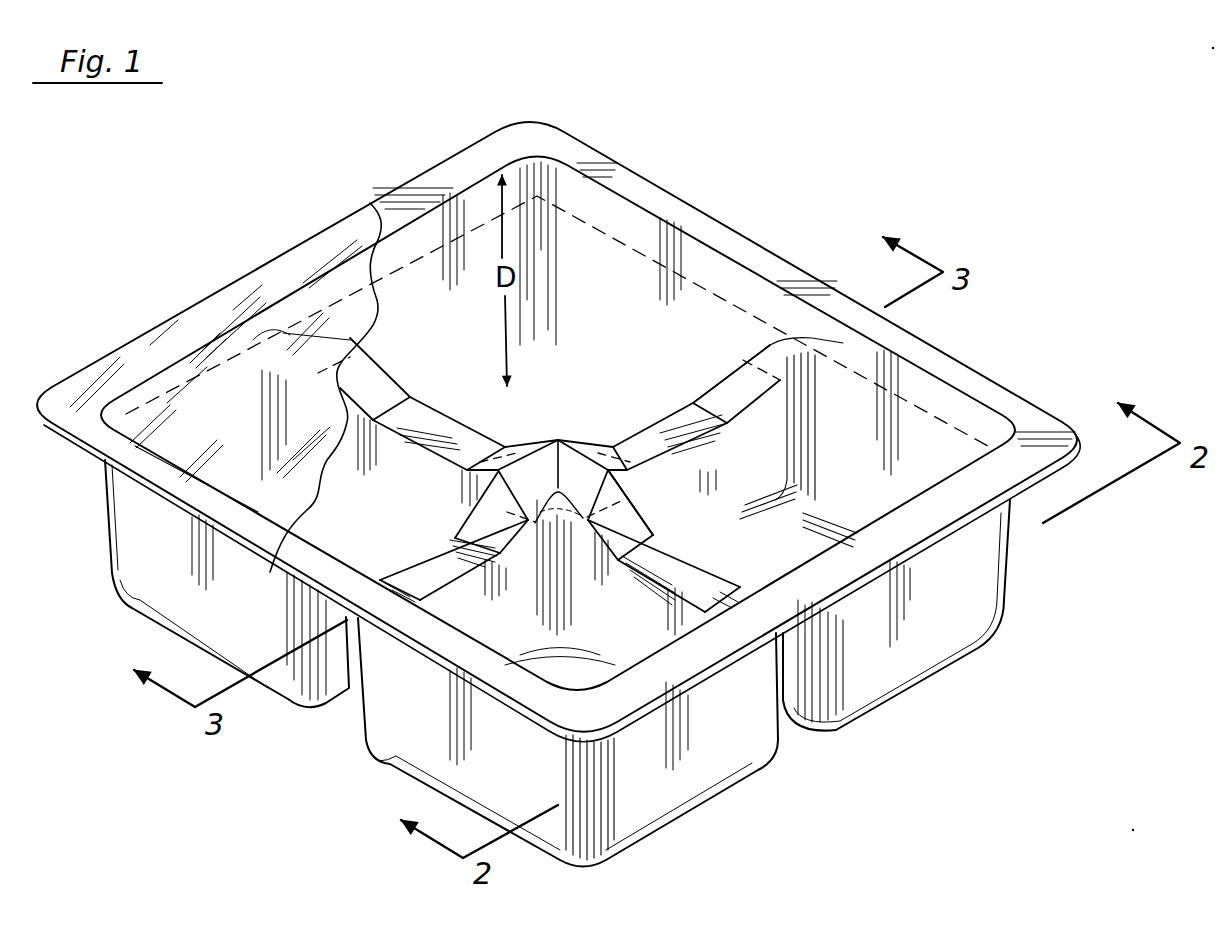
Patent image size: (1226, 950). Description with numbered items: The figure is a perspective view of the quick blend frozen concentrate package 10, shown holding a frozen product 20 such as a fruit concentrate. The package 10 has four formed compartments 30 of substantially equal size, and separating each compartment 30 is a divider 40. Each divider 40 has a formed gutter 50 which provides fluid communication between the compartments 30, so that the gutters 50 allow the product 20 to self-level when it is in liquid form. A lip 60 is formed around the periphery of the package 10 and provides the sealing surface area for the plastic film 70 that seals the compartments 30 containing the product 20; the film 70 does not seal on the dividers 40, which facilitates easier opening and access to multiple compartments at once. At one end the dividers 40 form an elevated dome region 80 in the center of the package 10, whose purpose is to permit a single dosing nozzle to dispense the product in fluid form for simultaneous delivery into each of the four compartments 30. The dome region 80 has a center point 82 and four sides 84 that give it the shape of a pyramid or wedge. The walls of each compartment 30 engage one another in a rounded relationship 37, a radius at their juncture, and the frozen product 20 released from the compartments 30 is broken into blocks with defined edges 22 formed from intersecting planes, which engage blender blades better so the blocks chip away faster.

The quick blend frozen concentrate package 10 is at (710, 176).
The frozen product 20 is at (437, 252).
The defined edges 22 is at (810, 443).
The compartment 30 is at (478, 212).
The rounded relationship 37 is at (588, 800).
The divider 40 is at (372, 386).
The gutter 50 is at (423, 420).
The lip 60 is at (887, 537).
The plastic film 70 is at (174, 390).
The dome region 80 is at (559, 418).
The center point 82 is at (562, 438).
The sides 84 is at (594, 490).